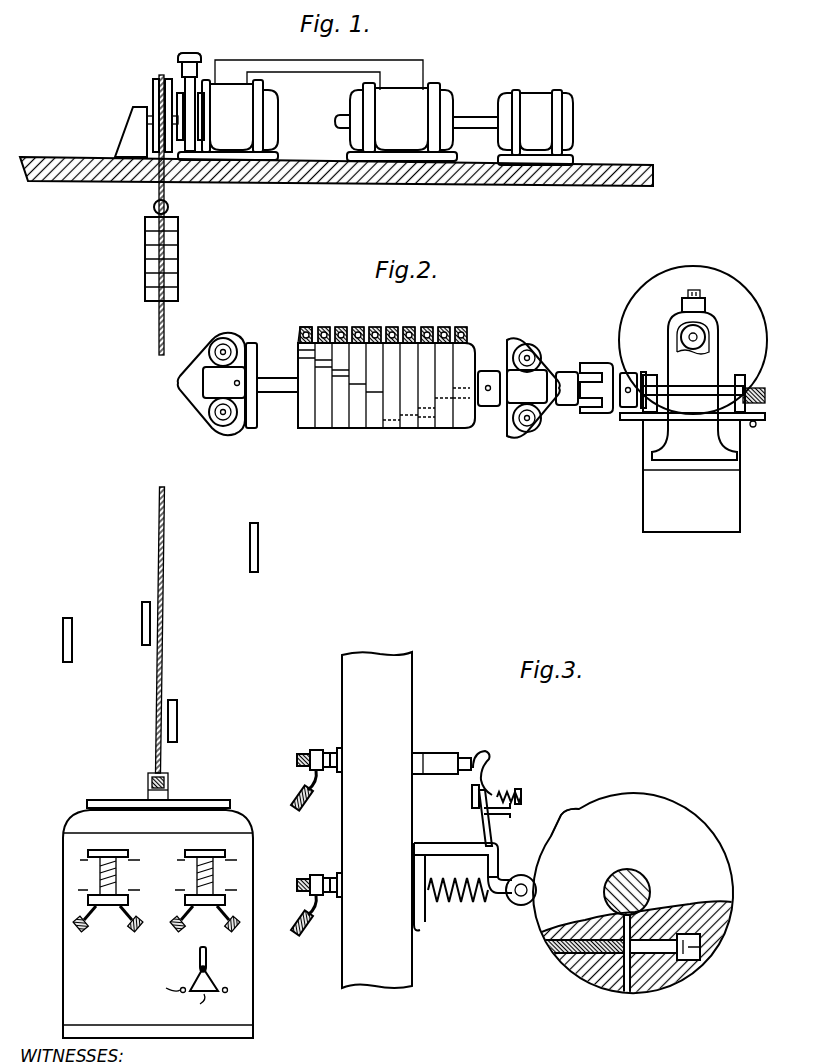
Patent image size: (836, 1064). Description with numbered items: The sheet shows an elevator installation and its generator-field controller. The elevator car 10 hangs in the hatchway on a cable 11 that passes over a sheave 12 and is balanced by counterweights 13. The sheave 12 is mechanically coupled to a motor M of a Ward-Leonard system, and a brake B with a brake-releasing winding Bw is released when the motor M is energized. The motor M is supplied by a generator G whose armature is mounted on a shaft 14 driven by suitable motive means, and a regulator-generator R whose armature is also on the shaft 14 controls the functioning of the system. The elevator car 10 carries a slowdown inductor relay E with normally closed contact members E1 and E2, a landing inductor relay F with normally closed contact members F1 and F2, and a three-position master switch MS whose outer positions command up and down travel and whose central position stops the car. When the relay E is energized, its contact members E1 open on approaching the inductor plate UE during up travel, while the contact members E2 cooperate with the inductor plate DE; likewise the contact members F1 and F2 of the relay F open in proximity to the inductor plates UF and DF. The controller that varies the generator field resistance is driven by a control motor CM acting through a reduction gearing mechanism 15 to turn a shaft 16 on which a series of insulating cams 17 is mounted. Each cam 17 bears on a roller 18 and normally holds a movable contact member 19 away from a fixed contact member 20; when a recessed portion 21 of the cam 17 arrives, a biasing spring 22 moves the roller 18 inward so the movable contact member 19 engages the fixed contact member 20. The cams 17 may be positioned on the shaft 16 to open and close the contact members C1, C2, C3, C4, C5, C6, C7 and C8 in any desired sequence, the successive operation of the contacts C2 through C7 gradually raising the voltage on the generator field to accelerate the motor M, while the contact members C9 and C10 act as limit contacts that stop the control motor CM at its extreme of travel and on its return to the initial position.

In FIG. 1, the elevator car 10 is at (63, 866).
In FIG. 1, the cable 11 is at (157, 333).
In FIG. 1, the sheave 12 is at (152, 82).
In FIG. 1, the counterweights 13 is at (178, 252).
In FIG. 1, the shaft 14 is at (345, 116).
In FIG. 2, the reduction gearing mechanism 15 is at (672, 430).
In FIG. 2, the shaft 16 is at (503, 360).
In FIG. 3, the shaft 16 is at (650, 890).
In FIG. 2, the cam 17 is at (325, 428).
In FIG. 3, the cam 17 is at (683, 826).
In FIG. 3, the roller 18 is at (523, 873).
In FIG. 2, the movable contact member 19 is at (298, 340).
In FIG. 3, the movable contact member 19 is at (484, 835).
In FIG. 2, the fixed contact member 20 is at (300, 328).
In FIG. 3, the fixed contact member 20 is at (474, 758).
In FIG. 2, the recessed portion 21 is at (338, 378).
In FIG. 3, the recessed portion 21 is at (556, 840).
In FIG. 3, the biasing spring 22 is at (455, 905).
In FIG. 1, the brake B is at (199, 41).
In FIG. 1, the brake-releasing winding Bw is at (178, 65).
In FIG. 1, the motor M is at (240, 41).
In FIG. 1, the generator G is at (449, 65).
In FIG. 1, the regulator-generator R is at (538, 92).
In FIG. 2, the control motor CM is at (751, 269).
In FIG. 2, the contact members C1 is at (305, 326).
In FIG. 2, the contact members C2 is at (323, 326).
In FIG. 2, the contact members C3 is at (341, 326).
In FIG. 2, the contact members C4 is at (358, 326).
In FIG. 2, the contact members C5 is at (375, 326).
In FIG. 2, the contact members C6 is at (392, 326).
In FIG. 2, the contact members C7 is at (409, 326).
In FIG. 2, the contact members C8 is at (427, 326).
In FIG. 2, the contact members C9 is at (444, 326).
In FIG. 2, the contact members C10 is at (461, 326).
In FIG. 1, the inductor plate UF is at (72, 645).
In FIG. 1, the inductor plate DF is at (142, 620).
In FIG. 1, the inductor plate DE is at (258, 558).
In FIG. 1, the inductor plate UE is at (177, 718).
In FIG. 1, the landing inductor relay F is at (86, 886).
In FIG. 1, the slowdown inductor relay E is at (178, 889).
In FIG. 1, the contact members F1 is at (88, 926).
In FIG. 1, the contact members F2 is at (131, 927).
In FIG. 1, the contact members E1 is at (183, 926).
In FIG. 1, the contact members E2 is at (228, 927).
In FIG. 1, the master switch MS is at (240, 971).